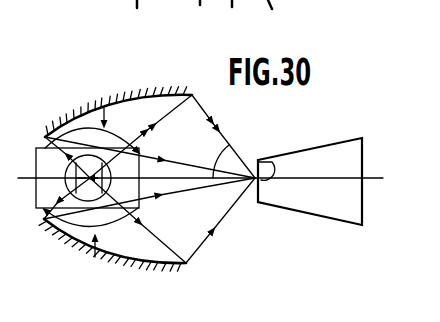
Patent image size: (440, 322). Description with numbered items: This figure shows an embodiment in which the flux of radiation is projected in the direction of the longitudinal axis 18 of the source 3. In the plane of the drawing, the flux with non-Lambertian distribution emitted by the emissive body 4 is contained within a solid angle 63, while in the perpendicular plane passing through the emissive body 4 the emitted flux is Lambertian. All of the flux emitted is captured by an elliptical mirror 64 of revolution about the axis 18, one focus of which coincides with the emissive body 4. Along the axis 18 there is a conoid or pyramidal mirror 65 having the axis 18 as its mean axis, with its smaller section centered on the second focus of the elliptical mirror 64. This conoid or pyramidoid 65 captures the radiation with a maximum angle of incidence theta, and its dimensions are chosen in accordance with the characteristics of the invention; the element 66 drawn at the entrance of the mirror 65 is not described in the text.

The source 3 is at (147, 196).
The emissive body 4 is at (56, 148).
The longitudinal axis 18 is at (176, 177).
The solid angle 63 is at (102, 106).
The elliptical mirror 64 is at (140, 82).
The conoid or pyramidal mirror 65 is at (333, 160).
The light guide entrance 66 is at (273, 162).